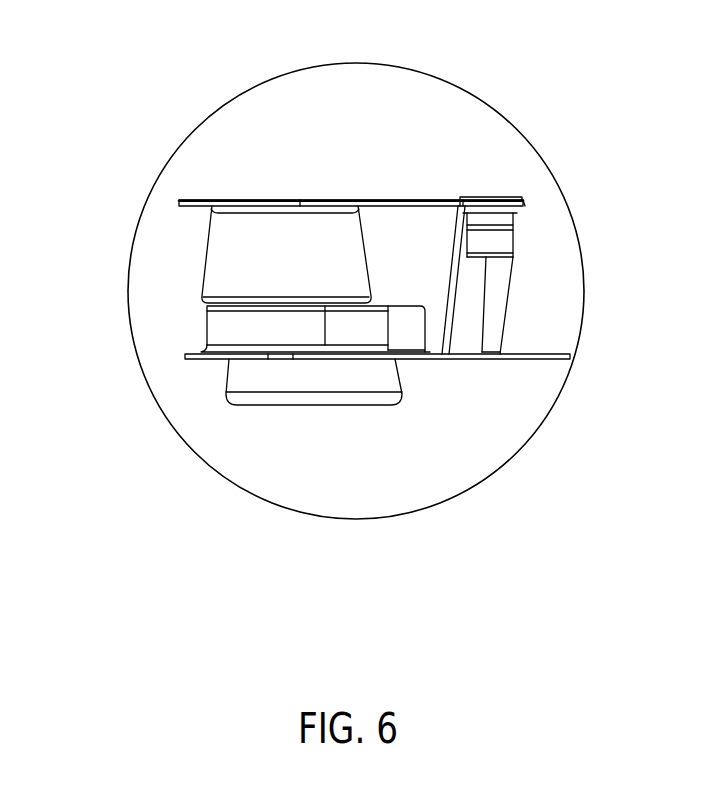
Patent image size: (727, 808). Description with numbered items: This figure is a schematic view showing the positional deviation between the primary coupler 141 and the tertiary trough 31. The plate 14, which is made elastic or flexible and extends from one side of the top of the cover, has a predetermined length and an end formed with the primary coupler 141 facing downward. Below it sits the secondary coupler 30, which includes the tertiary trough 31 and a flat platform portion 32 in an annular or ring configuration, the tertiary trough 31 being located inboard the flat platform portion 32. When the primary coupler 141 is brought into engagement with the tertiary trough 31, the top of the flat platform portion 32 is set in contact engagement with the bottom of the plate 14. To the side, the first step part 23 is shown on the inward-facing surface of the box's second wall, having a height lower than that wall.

The plate 14 is at (410, 200).
The primary coupler 141 is at (203, 257).
The first step part 23 is at (495, 255).
The secondary coupler 30 is at (185, 354).
The tertiary trough 31 is at (237, 378).
The flat platform portion 32 is at (302, 307).